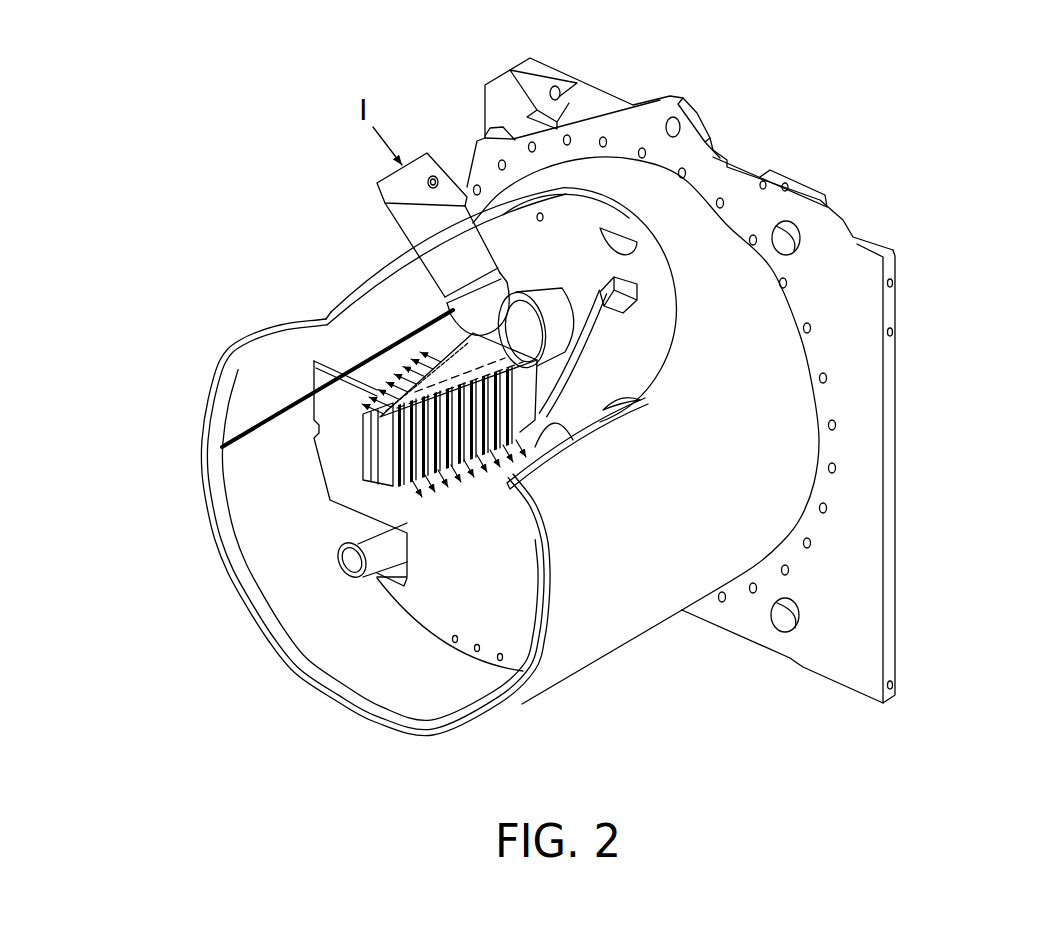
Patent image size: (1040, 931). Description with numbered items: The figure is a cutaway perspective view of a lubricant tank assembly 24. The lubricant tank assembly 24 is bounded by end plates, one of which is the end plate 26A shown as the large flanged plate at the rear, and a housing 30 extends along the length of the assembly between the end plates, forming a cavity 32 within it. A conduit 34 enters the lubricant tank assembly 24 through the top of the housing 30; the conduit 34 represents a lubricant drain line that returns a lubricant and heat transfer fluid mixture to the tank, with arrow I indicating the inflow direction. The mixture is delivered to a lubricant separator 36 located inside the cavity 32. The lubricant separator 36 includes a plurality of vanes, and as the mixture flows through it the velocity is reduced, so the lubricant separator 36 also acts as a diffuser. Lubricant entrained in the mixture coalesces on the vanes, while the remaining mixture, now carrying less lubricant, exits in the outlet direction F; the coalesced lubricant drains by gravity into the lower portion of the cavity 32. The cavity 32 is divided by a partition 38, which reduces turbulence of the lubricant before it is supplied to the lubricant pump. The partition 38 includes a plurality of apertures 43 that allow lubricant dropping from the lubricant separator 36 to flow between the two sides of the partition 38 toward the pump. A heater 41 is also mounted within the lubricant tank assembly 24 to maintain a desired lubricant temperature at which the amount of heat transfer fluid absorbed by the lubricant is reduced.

The lubricant tank assembly 24 is at (726, 367).
The end plate 26A is at (882, 238).
The housing 30 is at (292, 323).
The cavity 32 is at (260, 519).
The conduit 34 is at (390, 218).
The lubricant separator 36 is at (497, 368).
The partition 38 is at (496, 586).
The heater 41 is at (356, 545).
The apertures 43 is at (412, 550).